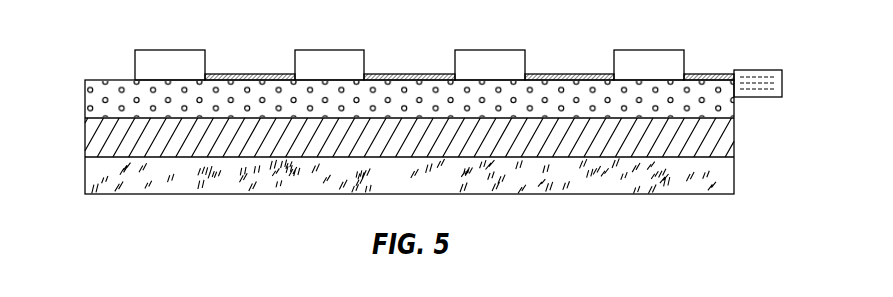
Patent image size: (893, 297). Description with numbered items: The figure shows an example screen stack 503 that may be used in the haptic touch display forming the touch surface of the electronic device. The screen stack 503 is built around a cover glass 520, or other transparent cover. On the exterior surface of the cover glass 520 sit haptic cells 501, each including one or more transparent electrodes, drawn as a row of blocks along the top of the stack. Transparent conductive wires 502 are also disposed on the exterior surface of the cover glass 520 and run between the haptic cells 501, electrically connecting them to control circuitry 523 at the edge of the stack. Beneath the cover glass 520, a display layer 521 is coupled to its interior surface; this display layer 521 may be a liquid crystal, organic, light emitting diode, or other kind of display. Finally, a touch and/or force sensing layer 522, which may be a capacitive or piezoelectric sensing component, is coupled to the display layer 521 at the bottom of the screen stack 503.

The haptic cells 501 is at (647, 50).
The transparent conductive wires 502 is at (703, 74).
The screen stack 503 is at (77, 81).
The cover glass 520 is at (737, 105).
The display layer 521 is at (737, 135).
The touch and/or force sensing layer 522 is at (737, 171).
The control circuitry 523 is at (753, 70).